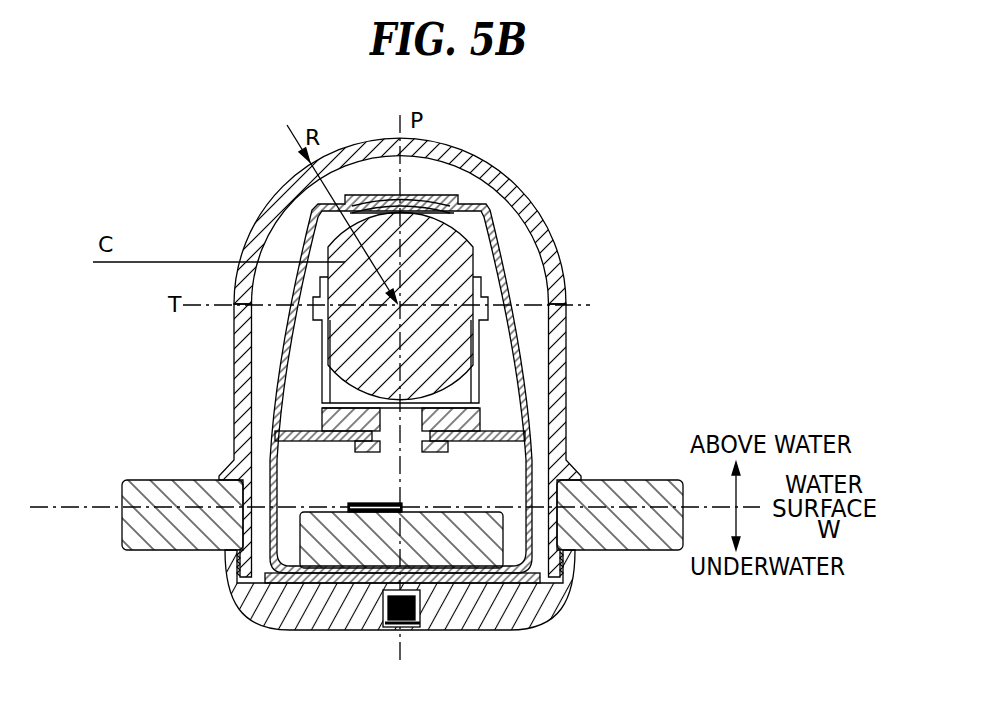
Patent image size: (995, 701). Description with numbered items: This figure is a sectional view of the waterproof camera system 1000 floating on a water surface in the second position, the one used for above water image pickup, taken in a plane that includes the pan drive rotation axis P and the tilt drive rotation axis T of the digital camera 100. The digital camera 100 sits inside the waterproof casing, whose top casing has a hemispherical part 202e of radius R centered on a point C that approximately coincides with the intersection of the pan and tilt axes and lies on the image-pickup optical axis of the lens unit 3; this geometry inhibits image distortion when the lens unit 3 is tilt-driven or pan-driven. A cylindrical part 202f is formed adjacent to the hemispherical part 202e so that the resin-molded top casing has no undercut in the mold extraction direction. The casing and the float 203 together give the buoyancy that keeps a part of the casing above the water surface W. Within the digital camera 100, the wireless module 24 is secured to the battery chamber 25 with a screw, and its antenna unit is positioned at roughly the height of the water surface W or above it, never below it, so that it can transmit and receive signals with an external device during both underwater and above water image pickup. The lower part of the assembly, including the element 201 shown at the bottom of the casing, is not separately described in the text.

The waterproof camera system 1000 is at (427, 99).
The digital camera 100 is at (496, 224).
The hemispherical part 202e is at (565, 265).
The cylindrical part 202f is at (567, 391).
The lens unit 3 is at (460, 268).
The wireless module 24 is at (358, 503).
The battery chamber 25 is at (305, 515).
The float 203 is at (125, 493).
The base 201 is at (562, 609).